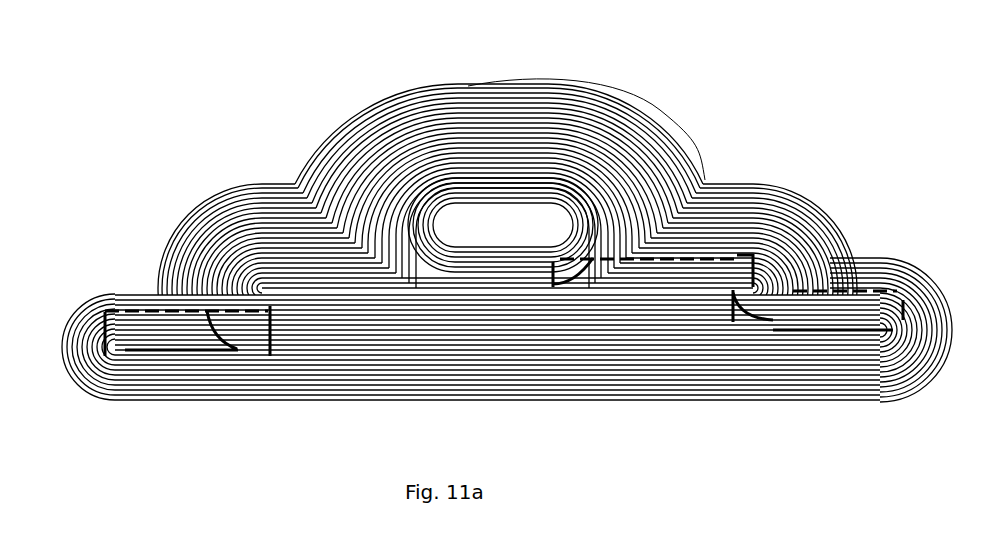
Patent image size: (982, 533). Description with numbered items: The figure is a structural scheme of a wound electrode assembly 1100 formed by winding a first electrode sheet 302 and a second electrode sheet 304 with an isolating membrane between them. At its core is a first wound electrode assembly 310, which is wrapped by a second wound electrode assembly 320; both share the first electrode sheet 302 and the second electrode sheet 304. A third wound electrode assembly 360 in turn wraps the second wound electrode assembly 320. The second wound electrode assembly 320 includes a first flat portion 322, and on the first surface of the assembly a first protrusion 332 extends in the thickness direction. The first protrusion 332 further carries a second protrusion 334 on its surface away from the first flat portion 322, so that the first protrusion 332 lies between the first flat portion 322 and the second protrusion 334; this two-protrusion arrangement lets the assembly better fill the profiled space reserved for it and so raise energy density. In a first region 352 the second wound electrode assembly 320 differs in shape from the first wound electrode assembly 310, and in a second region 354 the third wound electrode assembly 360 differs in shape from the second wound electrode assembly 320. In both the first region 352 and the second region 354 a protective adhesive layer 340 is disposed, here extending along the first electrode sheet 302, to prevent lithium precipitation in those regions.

The wound electrode assembly 1100 is at (135, 60).
The second protrusion 334 is at (347, 112).
The first wound electrode assembly 310 is at (405, 222).
The first electrode sheet 302 is at (628, 182).
The first protrusion 332 is at (185, 212).
The second wound electrode assembly 320 is at (277, 240).
The third wound electrode assembly 360 is at (185, 267).
The second electrode sheet 304 is at (688, 228).
The first region 352 is at (738, 257).
The second region 354 is at (808, 287).
The first flat portion 322 is at (325, 313).
The protective adhesive layer 340 is at (208, 350).